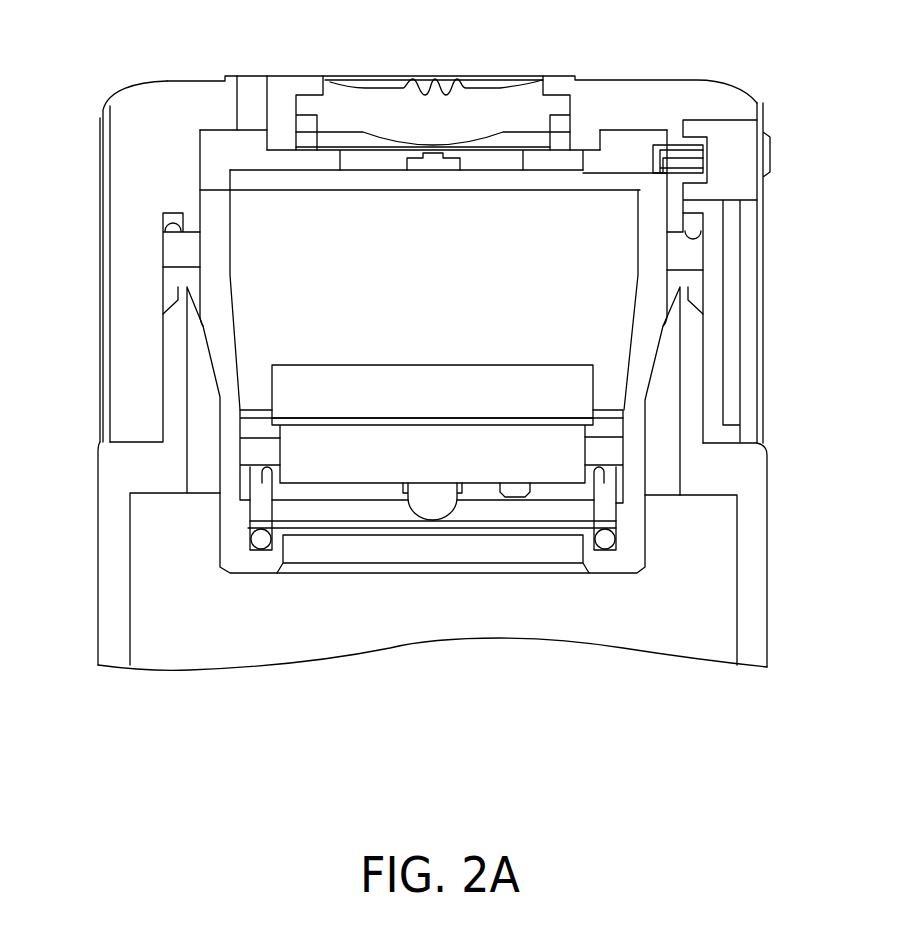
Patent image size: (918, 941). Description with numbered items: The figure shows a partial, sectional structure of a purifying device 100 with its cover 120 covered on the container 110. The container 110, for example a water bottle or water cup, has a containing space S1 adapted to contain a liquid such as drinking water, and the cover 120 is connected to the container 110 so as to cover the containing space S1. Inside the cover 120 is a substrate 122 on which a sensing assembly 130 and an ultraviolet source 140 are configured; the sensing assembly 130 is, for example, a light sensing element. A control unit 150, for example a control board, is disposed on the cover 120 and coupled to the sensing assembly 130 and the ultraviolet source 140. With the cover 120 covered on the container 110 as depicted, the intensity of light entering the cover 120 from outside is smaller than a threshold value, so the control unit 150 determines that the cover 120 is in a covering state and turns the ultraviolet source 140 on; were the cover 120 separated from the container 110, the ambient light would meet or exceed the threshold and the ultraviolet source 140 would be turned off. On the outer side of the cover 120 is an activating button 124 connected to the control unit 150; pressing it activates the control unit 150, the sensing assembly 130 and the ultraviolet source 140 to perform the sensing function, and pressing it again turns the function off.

The purifying device 100 is at (435, 381).
The container 110 is at (113, 588).
The cover 120 is at (122, 204).
The substrate 122 is at (557, 475).
The activating button 124 is at (500, 110).
The sensing assembly 130 is at (512, 487).
The ultraviolet source 140 is at (433, 503).
The control unit 150 is at (285, 180).
The containing space S1 is at (258, 638).